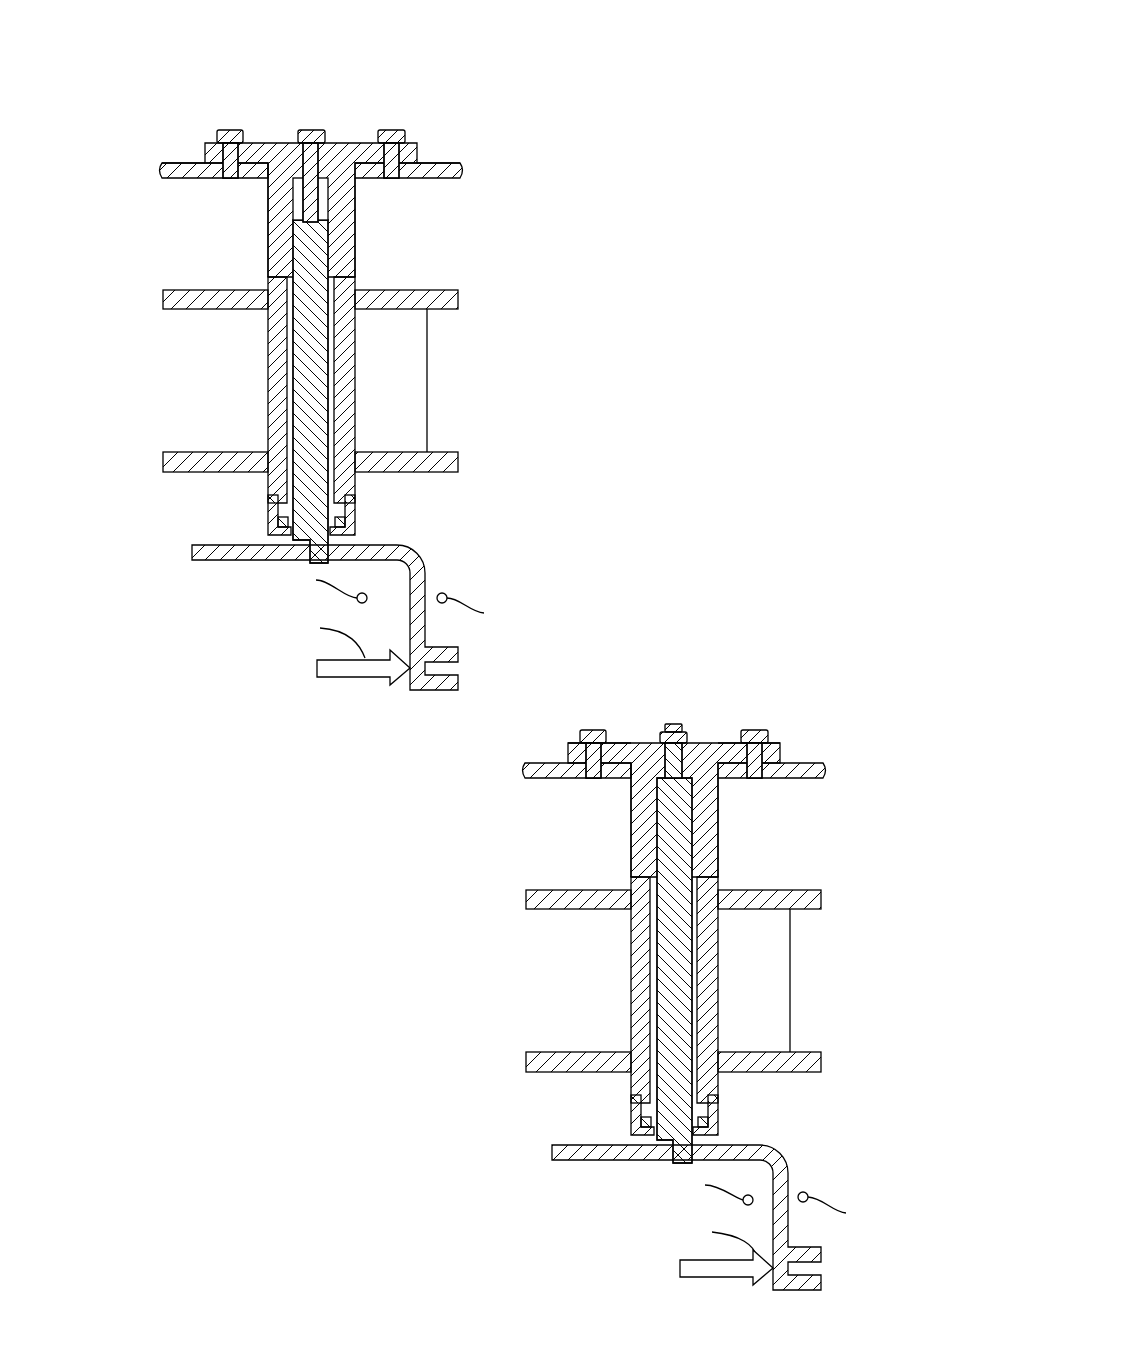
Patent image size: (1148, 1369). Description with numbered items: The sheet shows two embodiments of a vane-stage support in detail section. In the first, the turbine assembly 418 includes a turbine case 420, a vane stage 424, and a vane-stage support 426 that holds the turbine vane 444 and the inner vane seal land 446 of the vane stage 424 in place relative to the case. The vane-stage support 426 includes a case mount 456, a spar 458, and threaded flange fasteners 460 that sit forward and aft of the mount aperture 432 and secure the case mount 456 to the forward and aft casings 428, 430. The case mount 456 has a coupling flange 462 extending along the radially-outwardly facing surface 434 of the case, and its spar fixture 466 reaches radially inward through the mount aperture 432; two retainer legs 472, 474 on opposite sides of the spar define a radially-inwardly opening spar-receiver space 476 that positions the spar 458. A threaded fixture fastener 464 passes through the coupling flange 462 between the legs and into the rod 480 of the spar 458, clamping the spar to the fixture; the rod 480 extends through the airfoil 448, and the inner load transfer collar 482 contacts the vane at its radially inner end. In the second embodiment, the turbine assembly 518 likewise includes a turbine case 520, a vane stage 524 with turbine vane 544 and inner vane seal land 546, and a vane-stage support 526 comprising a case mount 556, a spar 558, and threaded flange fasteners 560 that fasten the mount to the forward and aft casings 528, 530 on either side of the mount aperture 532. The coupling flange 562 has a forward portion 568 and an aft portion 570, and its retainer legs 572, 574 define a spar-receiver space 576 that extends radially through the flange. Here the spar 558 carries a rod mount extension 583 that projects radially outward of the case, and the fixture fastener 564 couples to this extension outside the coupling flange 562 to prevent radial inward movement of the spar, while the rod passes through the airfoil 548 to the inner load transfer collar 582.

In FIG. 8, the turbine assembly 418 is at (133, 103).
In FIG. 8, the turbine case 420 is at (158, 152).
In FIG. 8, the vane stage 424 is at (252, 590).
In FIG. 8, the vane-stage support 426 is at (487, 177).
In FIG. 8, the forward casing 428 is at (187, 160).
In FIG. 8, the aft casing 430 is at (435, 160).
In FIG. 8, the mount aperture 432 is at (252, 190).
In FIG. 8, the radially-outwardly facing surface 434 is at (177, 160).
In FIG. 8, the turbine vane 444 is at (410, 395).
In FIG. 8, the inner vane seal land 446 is at (430, 550).
In FIG. 8, the airfoil 448 is at (357, 345).
In FIG. 8, the case mount 456 is at (412, 232).
In FIG. 8, the spar 458 is at (283, 273).
In FIG. 8, the threaded flange fasteners 460 is at (230, 130).
In FIG. 8, the coupling flange 462 is at (283, 85).
In FIG. 8, the threaded fixture fastener 464 is at (313, 128).
In FIG. 8, the spar fixture 466 is at (366, 243).
In FIG. 8, the forward retainer leg 472 is at (268, 247).
In FIG. 8, the aft retainer leg 474 is at (357, 215).
In FIG. 8, the spar-receiver space 476 is at (296, 174).
In FIG. 8, the rod 480 is at (296, 357).
In FIG. 8, the inner load transfer collar 482 is at (250, 497).
In FIG. 9, the turbine assembly 518 is at (724, 928).
In FIG. 9, the turbine case 520 is at (739, 745).
In FIG. 9, the vane stage 524 is at (702, 1190).
In FIG. 9, the vane-stage support 526 is at (739, 745).
In FIG. 9, the forward casing 528 is at (577, 730).
In FIG. 9, the aft casing 530 is at (776, 732).
In FIG. 9, the mount aperture 532 is at (581, 795).
In FIG. 9, the turbine vane 544 is at (694, 981).
In FIG. 9, the inner vane seal land 546 is at (709, 1190).
In FIG. 9, the airfoil 548 is at (694, 925).
In FIG. 9, the case mount 556 is at (672, 873).
In FIG. 9, the spar 558 is at (636, 812).
In FIG. 9, the threaded flange fasteners 560 is at (689, 713).
In FIG. 9, the coupling flange 562 is at (682, 681).
In FIG. 9, the fixture fastener 564 is at (697, 701).
In FIG. 9, the forward portion 568 is at (612, 683).
In FIG. 9, the aft portion 570 is at (749, 683).
In FIG. 9, the forward retainer leg 572 is at (557, 827).
In FIG. 9, the aft retainer leg 574 is at (772, 827).
In FIG. 9, the spar-receiver space 576 is at (723, 970).
In FIG. 9, the inner load transfer collar 582 is at (619, 1113).
In FIG. 9, the rod mount extension 583 is at (656, 731).